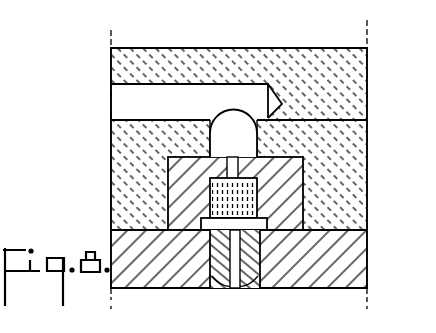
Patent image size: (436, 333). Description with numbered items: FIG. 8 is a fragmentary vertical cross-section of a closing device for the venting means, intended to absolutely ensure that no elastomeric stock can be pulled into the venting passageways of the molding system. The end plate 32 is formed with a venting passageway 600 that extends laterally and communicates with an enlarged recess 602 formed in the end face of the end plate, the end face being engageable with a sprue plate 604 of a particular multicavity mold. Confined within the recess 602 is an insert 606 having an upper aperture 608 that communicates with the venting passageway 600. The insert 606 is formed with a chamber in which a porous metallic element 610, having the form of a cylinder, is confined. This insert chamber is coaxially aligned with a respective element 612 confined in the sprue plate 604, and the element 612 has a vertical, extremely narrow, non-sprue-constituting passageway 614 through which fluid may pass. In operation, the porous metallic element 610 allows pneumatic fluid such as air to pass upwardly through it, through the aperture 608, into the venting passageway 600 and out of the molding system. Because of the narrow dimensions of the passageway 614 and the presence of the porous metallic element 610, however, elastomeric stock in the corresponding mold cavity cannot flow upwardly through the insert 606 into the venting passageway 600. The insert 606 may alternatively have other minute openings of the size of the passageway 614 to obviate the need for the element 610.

The end plate 32 is at (355, 87).
The venting passageway 600 is at (182, 92).
The enlarged recess 602 is at (172, 191).
The sprue plate 604 is at (355, 250).
The insert 606 is at (171, 215).
The upper aperture 608 is at (212, 153).
The porous metallic element 610 is at (246, 178).
The element 612 is at (213, 282).
The passageway 614 is at (233, 288).